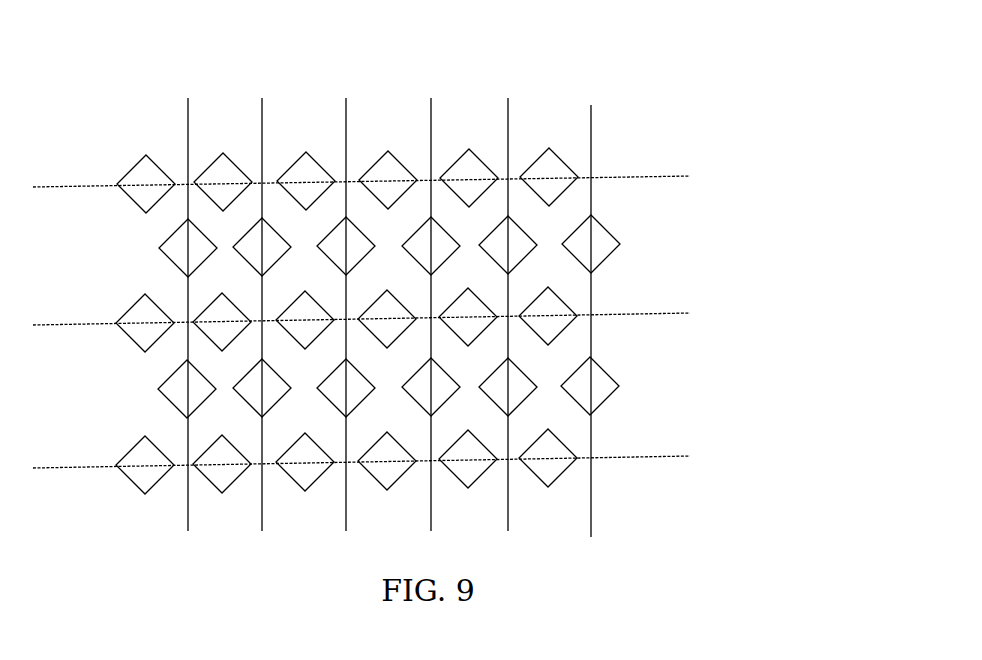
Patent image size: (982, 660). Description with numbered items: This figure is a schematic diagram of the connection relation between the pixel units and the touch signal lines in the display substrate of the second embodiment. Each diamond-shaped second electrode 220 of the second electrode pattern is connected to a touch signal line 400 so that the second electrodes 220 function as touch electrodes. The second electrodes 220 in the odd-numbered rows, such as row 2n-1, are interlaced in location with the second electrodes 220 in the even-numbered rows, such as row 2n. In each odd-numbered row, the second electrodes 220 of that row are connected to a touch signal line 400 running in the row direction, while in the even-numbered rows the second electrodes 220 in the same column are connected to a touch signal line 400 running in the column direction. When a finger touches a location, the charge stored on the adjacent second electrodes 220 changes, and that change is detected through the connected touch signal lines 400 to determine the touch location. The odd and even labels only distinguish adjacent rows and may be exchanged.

The second electrode 220 is at (548, 149).
The touch signal line 400 is at (662, 174).
The odd-numbered row 2n-1 is at (448, 181).
The even-numbered row 2n is at (467, 246).